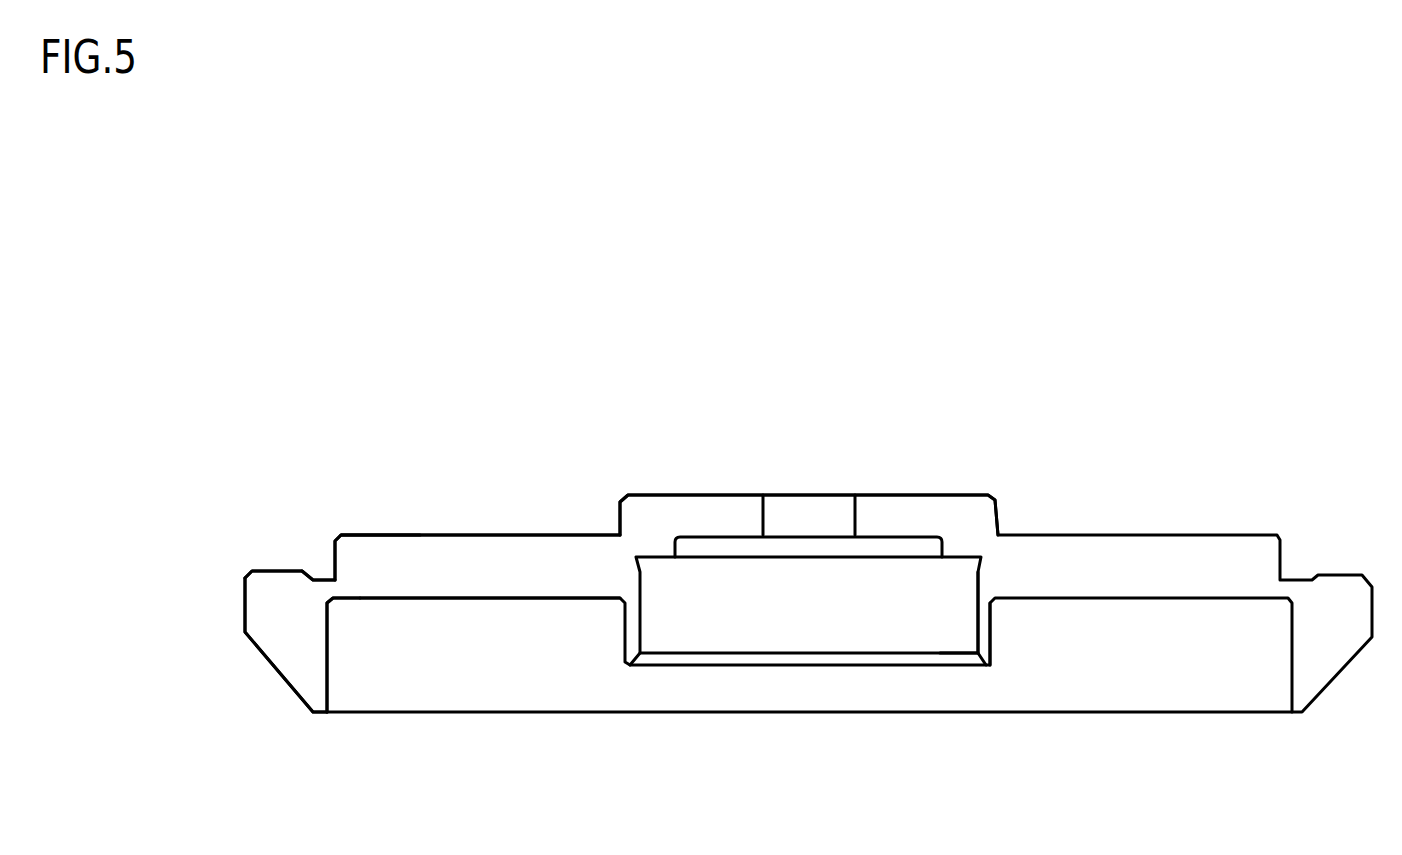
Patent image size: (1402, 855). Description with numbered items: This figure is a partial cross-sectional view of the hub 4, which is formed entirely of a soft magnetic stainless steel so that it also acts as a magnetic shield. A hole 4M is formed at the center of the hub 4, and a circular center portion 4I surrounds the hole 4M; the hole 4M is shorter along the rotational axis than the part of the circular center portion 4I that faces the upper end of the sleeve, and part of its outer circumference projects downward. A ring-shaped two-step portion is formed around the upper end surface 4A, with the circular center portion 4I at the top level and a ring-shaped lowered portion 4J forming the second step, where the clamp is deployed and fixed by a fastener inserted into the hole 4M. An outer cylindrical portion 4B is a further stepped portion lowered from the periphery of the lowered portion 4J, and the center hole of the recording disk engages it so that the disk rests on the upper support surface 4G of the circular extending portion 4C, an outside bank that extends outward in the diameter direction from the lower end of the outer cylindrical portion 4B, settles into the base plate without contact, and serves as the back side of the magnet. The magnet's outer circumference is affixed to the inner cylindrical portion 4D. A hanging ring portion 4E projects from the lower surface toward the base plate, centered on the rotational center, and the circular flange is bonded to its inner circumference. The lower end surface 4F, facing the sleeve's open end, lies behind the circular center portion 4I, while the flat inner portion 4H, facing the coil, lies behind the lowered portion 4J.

The hub 4 is at (992, 380).
The upper end surface 4A is at (498, 500).
The outer cylindrical portion 4B is at (335, 560).
The circular extending portion 4C is at (267, 618).
The inner cylindrical portion 4D is at (327, 660).
The hanging ring portion 4E is at (978, 620).
The lower end surface 4F is at (695, 537).
The upper support surface 4G is at (270, 572).
The flat inner portion 4H is at (513, 598).
The circular center portion 4I is at (690, 508).
The lowered portion 4J is at (400, 533).
The hole 4M is at (807, 512).